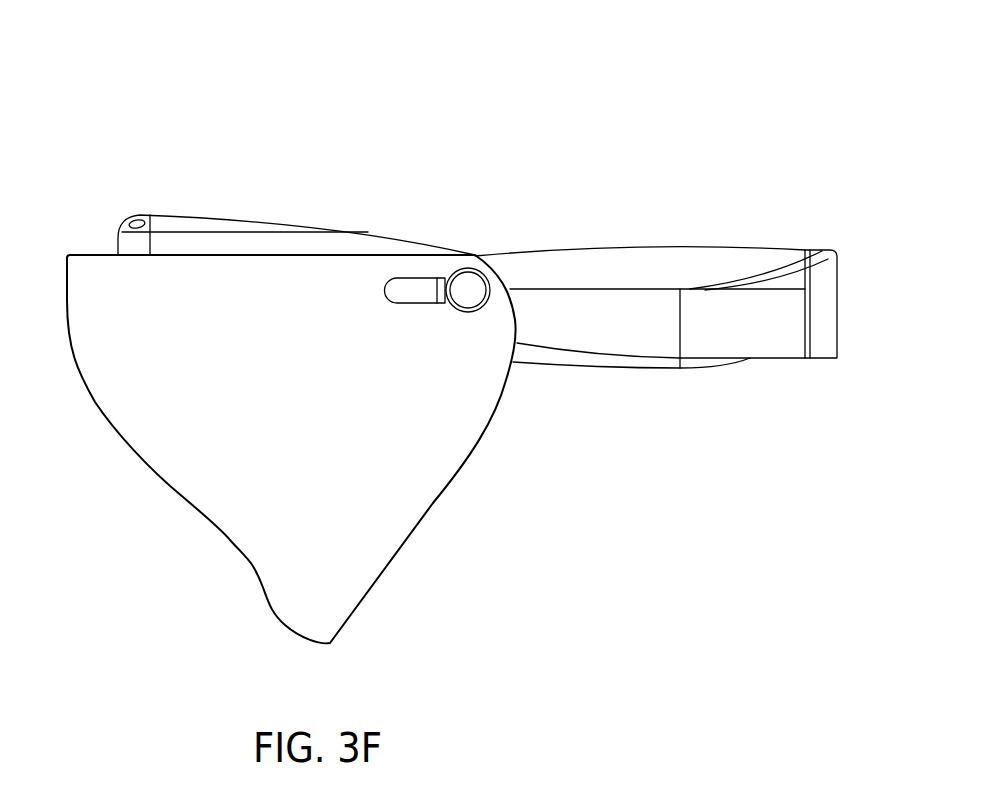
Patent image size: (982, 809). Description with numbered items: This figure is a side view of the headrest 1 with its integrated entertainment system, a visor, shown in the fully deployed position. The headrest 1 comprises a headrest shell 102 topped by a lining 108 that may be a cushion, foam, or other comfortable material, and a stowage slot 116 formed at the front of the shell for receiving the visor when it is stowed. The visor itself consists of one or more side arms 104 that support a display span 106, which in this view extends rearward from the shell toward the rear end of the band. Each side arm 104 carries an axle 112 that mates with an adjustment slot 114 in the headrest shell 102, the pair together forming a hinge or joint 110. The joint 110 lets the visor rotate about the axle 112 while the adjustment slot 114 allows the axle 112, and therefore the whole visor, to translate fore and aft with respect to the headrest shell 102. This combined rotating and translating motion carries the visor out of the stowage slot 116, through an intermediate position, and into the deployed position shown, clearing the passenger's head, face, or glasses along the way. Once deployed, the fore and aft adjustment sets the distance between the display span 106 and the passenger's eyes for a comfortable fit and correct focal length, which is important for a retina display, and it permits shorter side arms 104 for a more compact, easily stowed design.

The headrest 1 is at (115, 92).
The headrest shell 102 is at (190, 485).
The side arm 104 is at (657, 347).
The display span 106 is at (828, 312).
The lining 108 is at (233, 218).
The joint 110 is at (475, 255).
The axle 112 is at (473, 300).
The adjustment slot 114 is at (412, 300).
The stowage slot 116 is at (107, 253).